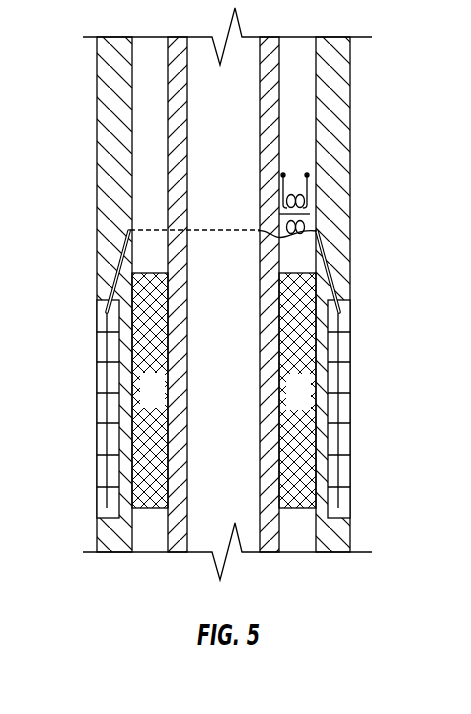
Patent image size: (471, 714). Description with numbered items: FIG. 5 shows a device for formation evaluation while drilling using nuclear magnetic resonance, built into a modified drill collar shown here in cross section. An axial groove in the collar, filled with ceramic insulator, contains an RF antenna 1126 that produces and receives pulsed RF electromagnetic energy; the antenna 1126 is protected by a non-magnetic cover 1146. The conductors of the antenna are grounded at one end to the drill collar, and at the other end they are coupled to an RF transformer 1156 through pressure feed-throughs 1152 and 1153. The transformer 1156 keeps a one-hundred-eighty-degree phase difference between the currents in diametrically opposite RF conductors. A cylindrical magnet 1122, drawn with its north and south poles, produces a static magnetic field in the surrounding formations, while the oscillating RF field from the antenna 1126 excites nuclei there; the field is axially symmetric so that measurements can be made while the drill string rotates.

The cylindrical magnet 1122 is at (142, 452).
The RF antenna 1126 is at (108, 425).
The non-magnetic cover 1146 is at (97, 353).
The pressure feed-through 1152 is at (334, 288).
The pressure feed-through 1153 is at (116, 262).
The RF transformer 1156 is at (332, 216).